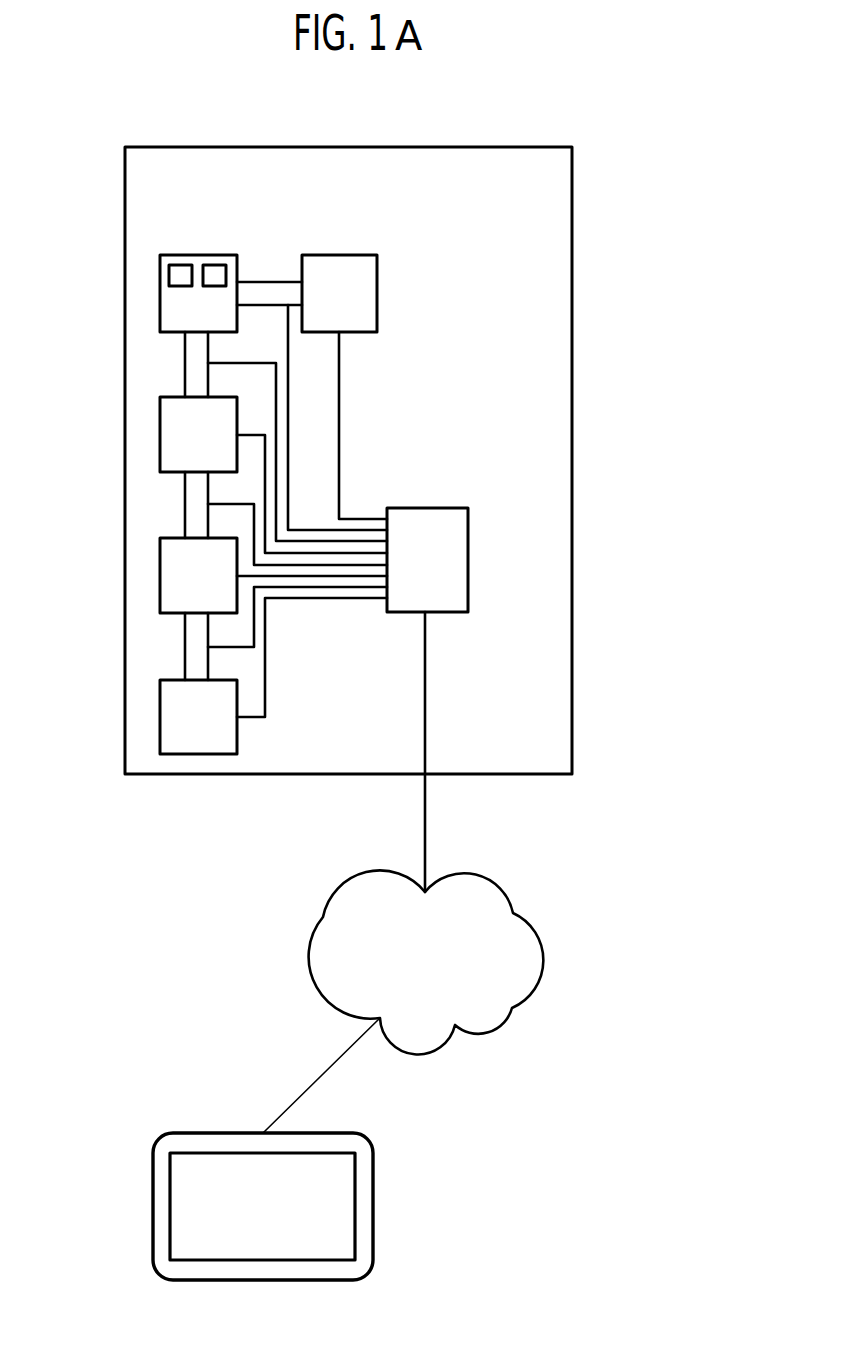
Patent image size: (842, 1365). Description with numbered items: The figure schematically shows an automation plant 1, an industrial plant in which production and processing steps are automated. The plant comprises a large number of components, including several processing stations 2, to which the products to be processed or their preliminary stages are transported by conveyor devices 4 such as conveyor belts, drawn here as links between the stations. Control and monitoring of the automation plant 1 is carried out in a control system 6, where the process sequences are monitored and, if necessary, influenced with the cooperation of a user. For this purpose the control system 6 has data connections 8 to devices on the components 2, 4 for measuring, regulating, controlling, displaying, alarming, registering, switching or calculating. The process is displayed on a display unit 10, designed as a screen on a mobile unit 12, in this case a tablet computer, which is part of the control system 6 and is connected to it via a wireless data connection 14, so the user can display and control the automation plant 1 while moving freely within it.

The automation plant 1 is at (469, 147).
The processing station 2 is at (160, 292).
The conveyor device 4 is at (266, 282).
The control system 6 is at (468, 560).
The data connection 8 is at (333, 579).
The display unit 10 is at (212, 1153).
The mobile unit 12 is at (373, 1207).
The wireless data connection 14 is at (544, 960).